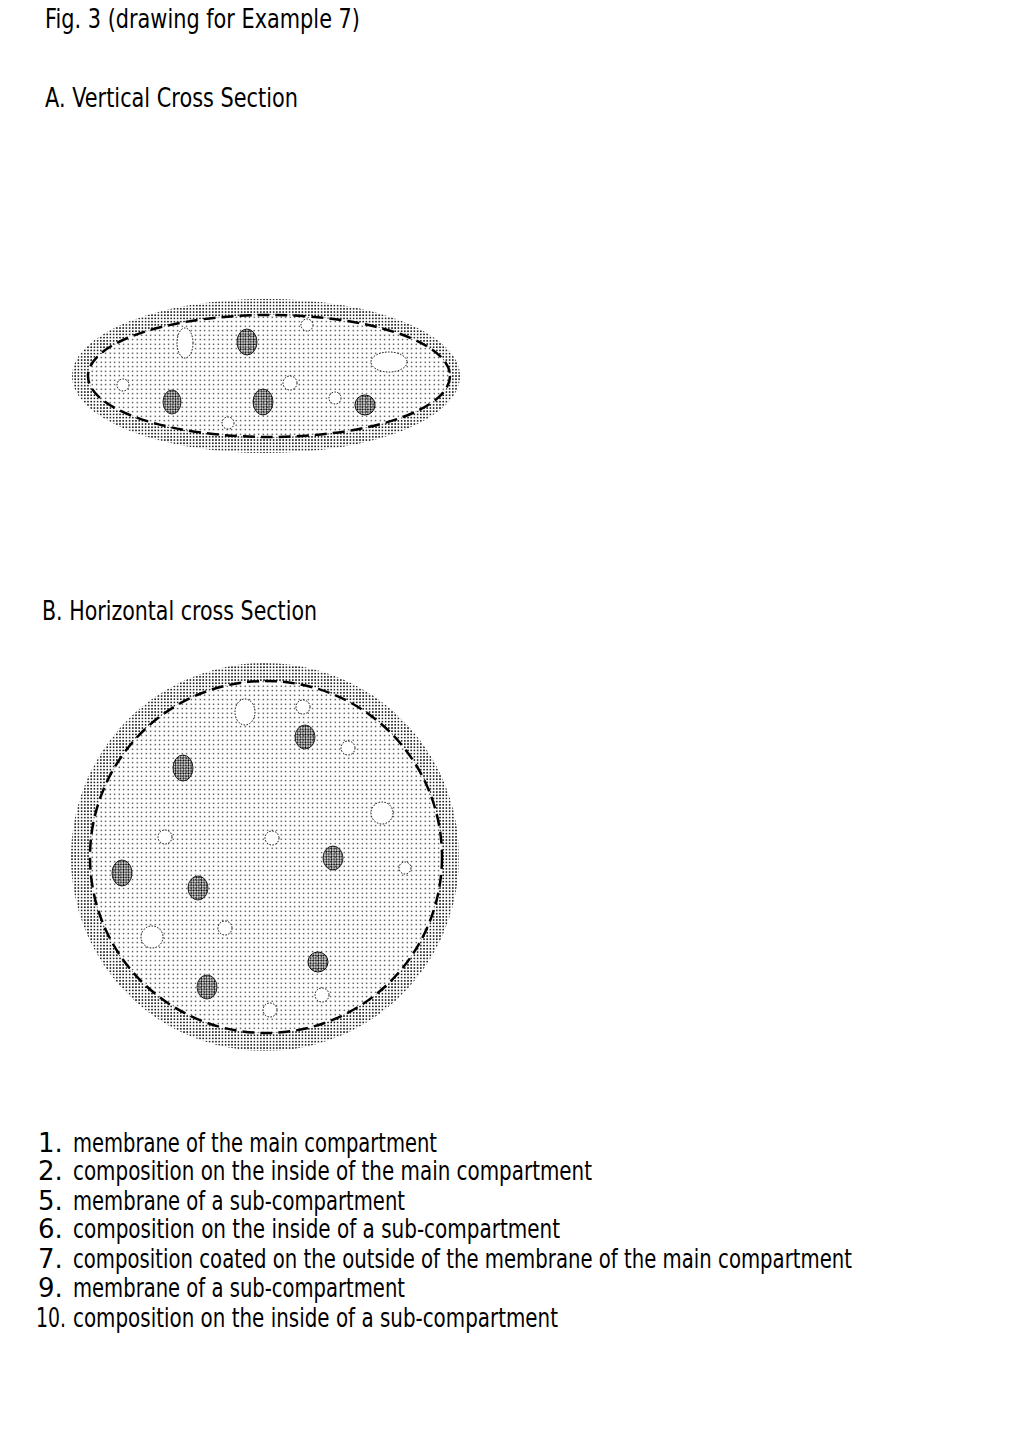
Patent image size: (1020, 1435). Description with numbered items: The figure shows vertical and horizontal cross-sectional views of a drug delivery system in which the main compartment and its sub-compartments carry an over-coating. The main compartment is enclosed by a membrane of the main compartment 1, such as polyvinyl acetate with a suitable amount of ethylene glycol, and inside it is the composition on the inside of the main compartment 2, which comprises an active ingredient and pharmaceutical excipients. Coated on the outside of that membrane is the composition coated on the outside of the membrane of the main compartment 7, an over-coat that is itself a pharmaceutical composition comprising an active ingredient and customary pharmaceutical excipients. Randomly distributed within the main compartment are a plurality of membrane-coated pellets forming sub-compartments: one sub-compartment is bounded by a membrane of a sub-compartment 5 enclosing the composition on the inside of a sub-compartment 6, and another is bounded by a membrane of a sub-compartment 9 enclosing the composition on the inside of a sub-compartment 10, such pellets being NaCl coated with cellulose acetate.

The membrane of the main compartment 1 is at (330, 322).
The composition on the inside of the main compartment 2 is at (360, 333).
The membrane of a sub-compartment 5 is at (395, 353).
The composition on the inside of a sub-compartment 6 is at (387, 363).
The composition coated on the outside of the membrane of the main compartment 7 is at (455, 393).
The membrane of a sub-compartment 9 is at (370, 405).
The composition on the inside of a sub-compartment 10 is at (367, 410).